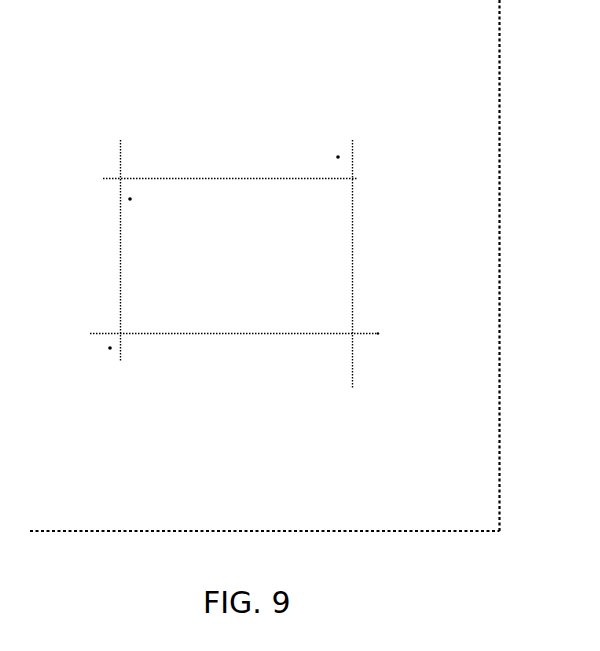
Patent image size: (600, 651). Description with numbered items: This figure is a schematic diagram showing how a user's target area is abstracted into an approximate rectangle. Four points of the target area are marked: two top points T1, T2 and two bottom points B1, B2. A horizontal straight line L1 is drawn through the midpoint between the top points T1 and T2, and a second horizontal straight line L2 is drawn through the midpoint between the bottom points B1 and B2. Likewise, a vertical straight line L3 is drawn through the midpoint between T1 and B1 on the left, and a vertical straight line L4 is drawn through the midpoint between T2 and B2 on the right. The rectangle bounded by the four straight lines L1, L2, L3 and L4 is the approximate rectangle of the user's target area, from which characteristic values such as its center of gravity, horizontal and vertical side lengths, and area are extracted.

The horizontal straight line L1 is at (230, 162).
The horizontal straight line L2 is at (234, 354).
The vertical straight line L3 is at (102, 251).
The vertical straight line L4 is at (367, 264).
The top point T1 is at (140, 199).
The top point T2 is at (356, 158).
The bottom point B1 is at (89, 357).
The bottom point B2 is at (388, 318).